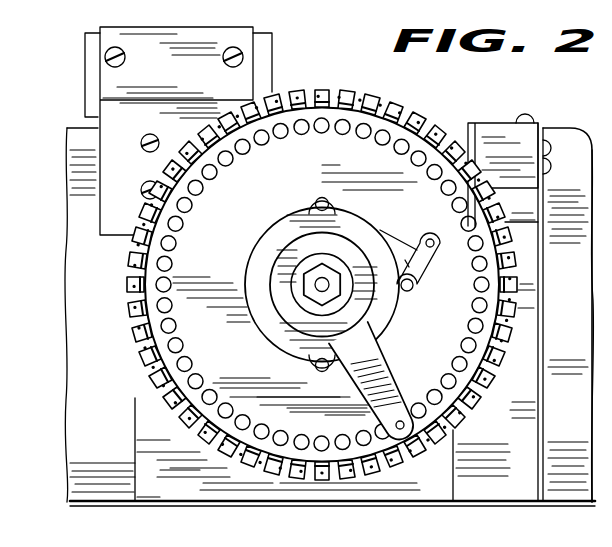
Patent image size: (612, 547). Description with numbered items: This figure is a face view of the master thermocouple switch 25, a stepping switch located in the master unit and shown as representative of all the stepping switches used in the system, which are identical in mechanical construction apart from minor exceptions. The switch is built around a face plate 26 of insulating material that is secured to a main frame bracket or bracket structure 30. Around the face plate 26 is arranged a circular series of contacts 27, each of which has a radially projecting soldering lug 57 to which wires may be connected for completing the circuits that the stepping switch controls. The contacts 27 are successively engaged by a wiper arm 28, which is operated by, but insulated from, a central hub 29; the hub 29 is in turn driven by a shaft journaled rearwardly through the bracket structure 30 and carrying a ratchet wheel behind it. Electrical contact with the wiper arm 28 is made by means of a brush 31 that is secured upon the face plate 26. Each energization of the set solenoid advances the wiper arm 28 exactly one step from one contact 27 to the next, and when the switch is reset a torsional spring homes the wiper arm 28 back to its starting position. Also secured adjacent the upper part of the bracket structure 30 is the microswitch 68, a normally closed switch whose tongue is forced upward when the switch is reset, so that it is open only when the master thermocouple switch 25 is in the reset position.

The master thermocouple switch 25 is at (446, 122).
The face plate 26 is at (370, 157).
The contacts 27 is at (201, 190).
The wiper arm 28 is at (397, 383).
The hub 29 is at (300, 311).
The bracket structure 30 is at (192, 497).
The brush 31 is at (394, 240).
The soldering lugs 57 is at (343, 89).
The microswitch 68 is at (85, 97).